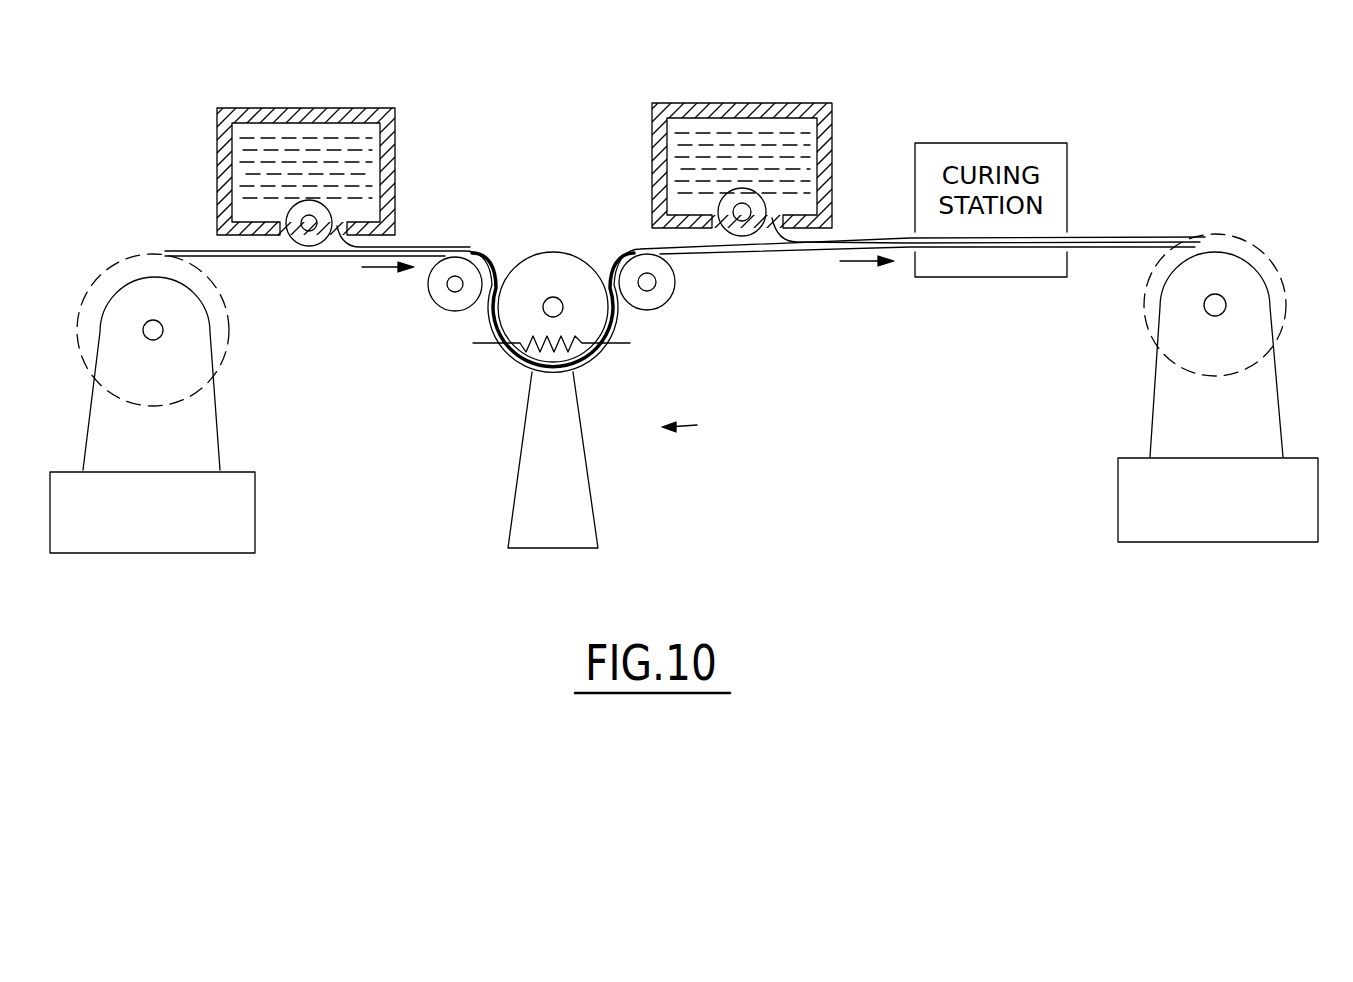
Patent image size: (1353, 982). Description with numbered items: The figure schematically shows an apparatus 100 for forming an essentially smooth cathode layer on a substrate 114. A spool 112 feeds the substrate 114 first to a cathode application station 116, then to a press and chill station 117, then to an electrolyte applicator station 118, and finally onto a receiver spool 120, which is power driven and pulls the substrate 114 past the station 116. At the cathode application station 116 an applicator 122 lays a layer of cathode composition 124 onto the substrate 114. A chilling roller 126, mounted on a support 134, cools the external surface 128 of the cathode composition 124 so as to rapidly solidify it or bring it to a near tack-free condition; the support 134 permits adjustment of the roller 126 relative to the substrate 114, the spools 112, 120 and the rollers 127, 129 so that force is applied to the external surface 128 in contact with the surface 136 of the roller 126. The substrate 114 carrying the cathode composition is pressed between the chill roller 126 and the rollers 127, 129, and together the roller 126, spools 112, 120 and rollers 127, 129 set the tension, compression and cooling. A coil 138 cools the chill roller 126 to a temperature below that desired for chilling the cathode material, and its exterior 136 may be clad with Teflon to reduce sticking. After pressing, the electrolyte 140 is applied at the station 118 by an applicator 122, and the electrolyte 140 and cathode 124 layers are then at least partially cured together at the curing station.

The apparatus 100 is at (561, 398).
The spool 112 is at (100, 280).
The substrate 114 is at (172, 257).
The cathode application station 116 is at (278, 110).
The press and chill station 117 is at (703, 429).
The electrolyte applicator station 118 is at (776, 104).
The receiver spool 120 is at (1233, 233).
The applicator 122 is at (313, 238).
The cathode composition 124 is at (633, 246).
The chilling roller 126 is at (552, 271).
The roller 127 is at (453, 305).
The external surface of the cathode composition 128 is at (403, 245).
The roller 129 is at (665, 298).
The support 134 is at (520, 468).
The surface of the roller 136 is at (560, 250).
The coil 138 is at (618, 346).
The electrolyte 140 is at (840, 238).